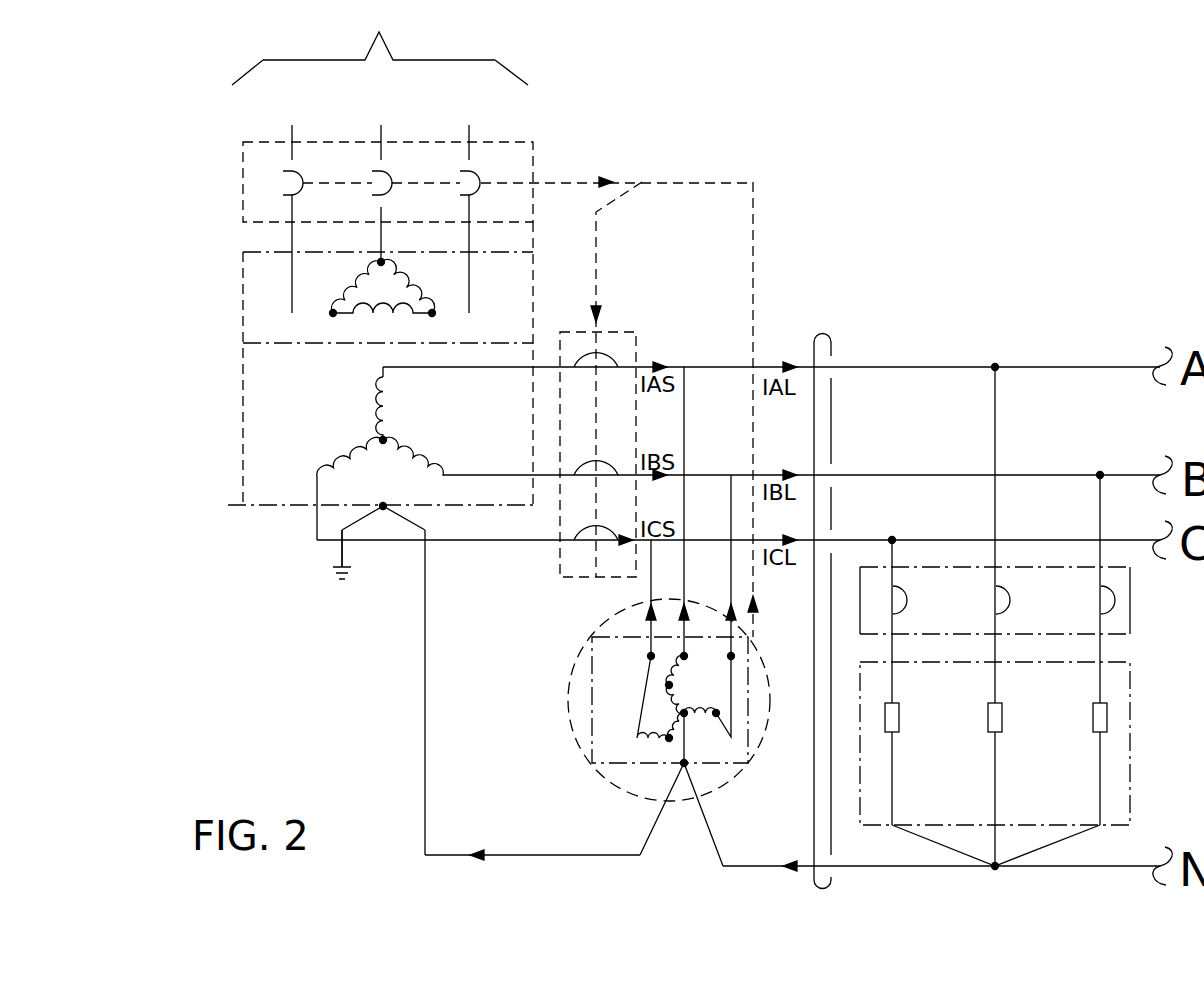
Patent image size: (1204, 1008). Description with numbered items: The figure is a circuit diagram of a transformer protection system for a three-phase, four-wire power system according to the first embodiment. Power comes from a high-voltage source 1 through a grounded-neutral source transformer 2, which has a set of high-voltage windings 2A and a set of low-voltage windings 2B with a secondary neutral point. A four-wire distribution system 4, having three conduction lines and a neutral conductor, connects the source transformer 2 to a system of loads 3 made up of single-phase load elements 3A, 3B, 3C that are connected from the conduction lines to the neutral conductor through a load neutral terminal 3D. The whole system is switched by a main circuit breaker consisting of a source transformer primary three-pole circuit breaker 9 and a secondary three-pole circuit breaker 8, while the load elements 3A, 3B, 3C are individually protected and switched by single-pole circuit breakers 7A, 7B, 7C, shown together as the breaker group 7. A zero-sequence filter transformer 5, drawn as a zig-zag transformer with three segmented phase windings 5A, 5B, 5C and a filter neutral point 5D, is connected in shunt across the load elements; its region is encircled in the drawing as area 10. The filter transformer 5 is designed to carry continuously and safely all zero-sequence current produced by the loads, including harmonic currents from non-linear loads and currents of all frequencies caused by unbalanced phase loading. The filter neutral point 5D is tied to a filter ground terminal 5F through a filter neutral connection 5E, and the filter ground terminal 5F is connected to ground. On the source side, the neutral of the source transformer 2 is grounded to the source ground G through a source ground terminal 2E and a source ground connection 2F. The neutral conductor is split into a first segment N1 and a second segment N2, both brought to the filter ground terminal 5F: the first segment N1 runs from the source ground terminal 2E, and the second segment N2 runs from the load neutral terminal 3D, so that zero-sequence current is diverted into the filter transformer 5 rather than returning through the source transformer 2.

The high-voltage source 1 is at (380, 61).
The grounded-neutral source transformer 2 is at (194, 276).
The high-voltage windings 2A is at (236, 307).
The low-voltage windings 2B is at (235, 437).
The source ground terminal 2E is at (387, 512).
The source ground connection 2F is at (328, 561).
The source ground G is at (330, 591).
The system of loads 3 is at (1025, 786).
The single-phase load element 3A is at (1011, 784).
The single-phase load element 3B is at (1084, 764).
The single-phase load element 3C is at (912, 764).
The load neutral terminal 3D is at (1002, 875).
The four-wire distribution system 4 is at (831, 323).
The zero-sequence filter transformer 5 is at (703, 616).
The segmented phase winding 5A is at (672, 688).
The segmented phase winding 5B is at (690, 712).
The segmented phase winding 5C is at (676, 717).
The filter neutral point 5D is at (687, 717).
The filter neutral connection 5E is at (708, 752).
The filter ground terminal 5F is at (660, 775).
The single-pole circuit breakers 7 is at (1017, 534).
The single-pole circuit breaker 7A is at (1020, 534).
The single-pole circuit breaker 7B is at (1091, 588).
The single-pole circuit breaker 7C is at (917, 620).
The secondary three-pole circuit breaker 8 is at (632, 323).
The source transformer primary three-pole circuit breaker 9 is at (545, 162).
The zero-sequence current path 10 is at (553, 681).
The first segment of the neutral conductor N1 is at (433, 806).
The second segment of the neutral conductor N2 is at (799, 845).